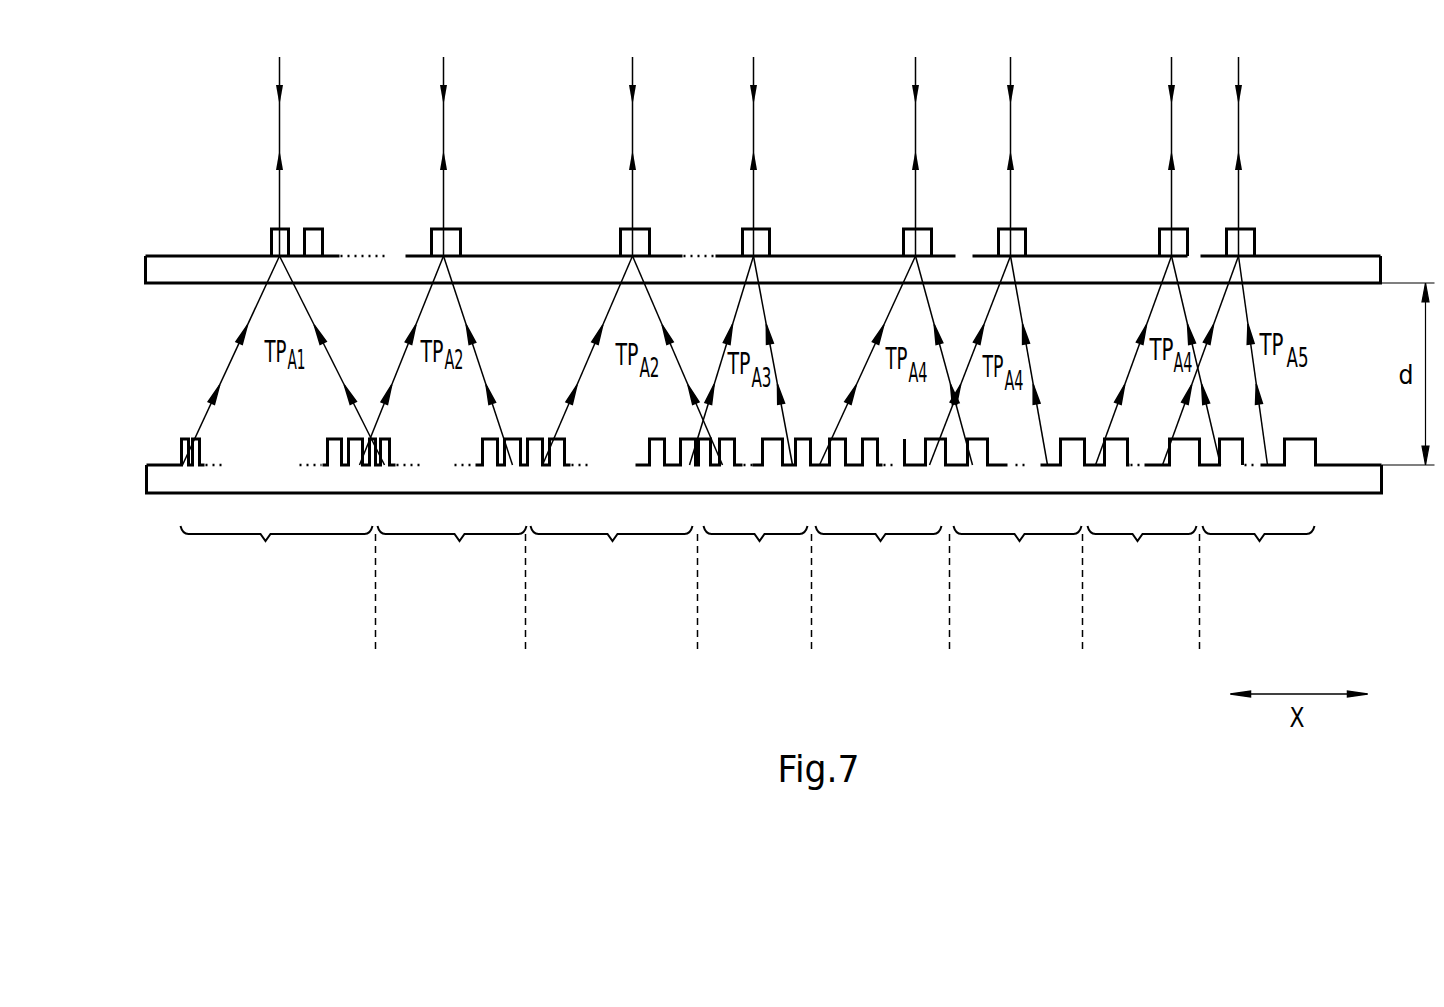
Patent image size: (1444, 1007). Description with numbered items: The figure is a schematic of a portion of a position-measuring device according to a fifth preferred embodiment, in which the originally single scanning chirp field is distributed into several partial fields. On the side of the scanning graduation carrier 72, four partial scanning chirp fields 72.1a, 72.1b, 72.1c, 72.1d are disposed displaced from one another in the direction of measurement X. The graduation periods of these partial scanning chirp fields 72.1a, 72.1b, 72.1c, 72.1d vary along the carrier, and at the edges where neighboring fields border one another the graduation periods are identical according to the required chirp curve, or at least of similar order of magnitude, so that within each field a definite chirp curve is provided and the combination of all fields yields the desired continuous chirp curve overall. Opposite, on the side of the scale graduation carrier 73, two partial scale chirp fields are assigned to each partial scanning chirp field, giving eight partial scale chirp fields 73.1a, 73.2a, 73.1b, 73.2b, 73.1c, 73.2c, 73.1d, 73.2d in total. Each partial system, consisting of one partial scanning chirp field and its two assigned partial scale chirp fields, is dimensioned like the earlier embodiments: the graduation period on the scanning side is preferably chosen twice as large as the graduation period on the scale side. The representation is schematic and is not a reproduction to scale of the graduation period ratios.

The scanning graduation carrier 72 is at (181, 281).
The partial scanning chirp field 72.1a is at (343, 209).
The partial scanning chirp field 72.1b is at (668, 208).
The partial scanning chirp field 72.1c is at (950, 208).
The partial scanning chirp field 72.1d is at (1195, 206).
The scale graduation carrier 73 is at (156, 463).
The partial scale chirp field 73.1a is at (277, 589).
The partial scale chirp field 73.2a is at (452, 589).
The partial scale chirp field 73.1b is at (612, 589).
The partial scale chirp field 73.2b is at (754, 589).
The partial scale chirp field 73.1c is at (879, 589).
The partial scale chirp field 73.2c is at (1018, 589).
The partial scale chirp field 73.1d is at (1141, 589).
The partial scale chirp field 73.2d is at (1262, 589).